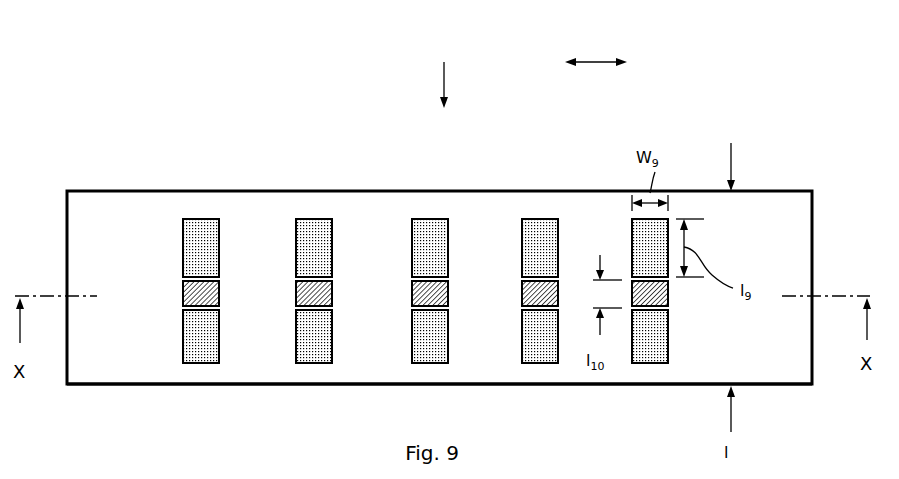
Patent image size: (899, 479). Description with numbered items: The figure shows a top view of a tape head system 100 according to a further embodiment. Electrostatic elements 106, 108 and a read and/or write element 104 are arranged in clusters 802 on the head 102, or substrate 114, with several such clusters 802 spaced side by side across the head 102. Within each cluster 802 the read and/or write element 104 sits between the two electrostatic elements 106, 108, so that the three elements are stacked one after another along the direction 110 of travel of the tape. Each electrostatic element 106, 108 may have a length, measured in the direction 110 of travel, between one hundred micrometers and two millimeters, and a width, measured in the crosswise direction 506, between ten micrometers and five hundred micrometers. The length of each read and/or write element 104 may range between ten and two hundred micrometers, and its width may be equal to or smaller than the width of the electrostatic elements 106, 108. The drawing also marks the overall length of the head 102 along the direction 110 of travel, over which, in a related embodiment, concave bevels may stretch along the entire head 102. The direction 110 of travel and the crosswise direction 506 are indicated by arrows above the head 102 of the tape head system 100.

The tape head system 100 is at (435, 250).
The head 102 is at (148, 367).
The read and/or write element 104 is at (197, 294).
The electrostatic element 106 is at (200, 235).
The electrostatic element 108 is at (210, 347).
The direction of travel 110 is at (444, 72).
The substrate 114 is at (97, 386).
The crosswise direction 506 is at (588, 62).
The cluster 802 is at (226, 210).